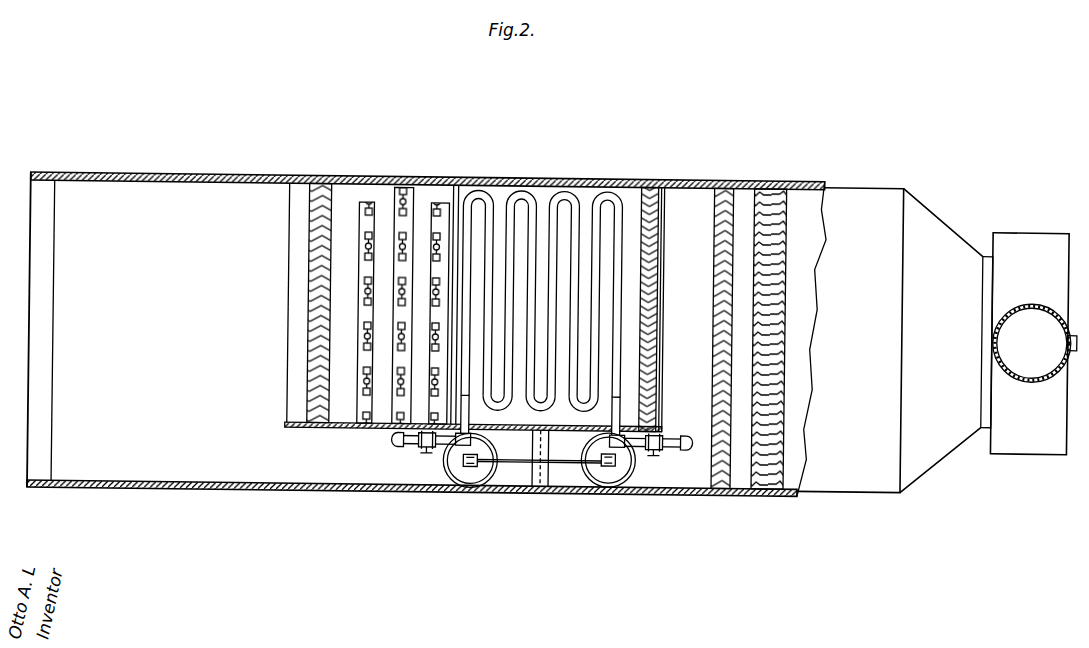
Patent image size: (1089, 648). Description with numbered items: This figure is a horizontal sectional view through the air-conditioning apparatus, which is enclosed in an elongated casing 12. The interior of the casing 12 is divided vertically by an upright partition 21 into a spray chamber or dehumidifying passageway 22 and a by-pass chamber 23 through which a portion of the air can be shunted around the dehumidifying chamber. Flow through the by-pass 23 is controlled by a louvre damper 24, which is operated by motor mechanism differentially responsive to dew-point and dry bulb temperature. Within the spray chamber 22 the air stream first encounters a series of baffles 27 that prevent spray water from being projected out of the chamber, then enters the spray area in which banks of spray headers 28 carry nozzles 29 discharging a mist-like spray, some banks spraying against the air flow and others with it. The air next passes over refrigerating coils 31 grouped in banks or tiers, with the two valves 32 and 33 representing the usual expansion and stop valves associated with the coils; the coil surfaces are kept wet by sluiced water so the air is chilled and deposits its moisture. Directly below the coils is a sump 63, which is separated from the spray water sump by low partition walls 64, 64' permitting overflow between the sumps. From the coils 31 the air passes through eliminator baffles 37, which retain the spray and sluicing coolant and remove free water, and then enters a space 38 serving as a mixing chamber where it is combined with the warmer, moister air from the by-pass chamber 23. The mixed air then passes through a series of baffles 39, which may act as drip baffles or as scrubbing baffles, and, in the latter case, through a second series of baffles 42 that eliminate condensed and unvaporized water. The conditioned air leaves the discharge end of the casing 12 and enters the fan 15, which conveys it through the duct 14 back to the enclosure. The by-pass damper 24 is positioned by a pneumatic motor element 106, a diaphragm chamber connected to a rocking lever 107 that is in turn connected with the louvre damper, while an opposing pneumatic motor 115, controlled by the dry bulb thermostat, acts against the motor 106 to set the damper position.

The casing 12 is at (212, 170).
The duct 14 is at (1035, 366).
The fan 15 is at (1030, 236).
The upright partition 21 is at (283, 420).
The spray chamber 22 is at (270, 336).
The by-pass chamber 23 is at (292, 452).
The louvre damper 24 is at (541, 484).
The baffles 27 is at (312, 255).
The spray headers 28 is at (391, 182).
The nozzles 29 is at (397, 241).
The refrigerating coils 31 is at (508, 192).
The valve 32 is at (660, 449).
The valve 33 is at (425, 447).
The eliminator baffles 37 is at (654, 278).
The mixing chamber 38 is at (689, 217).
The baffles 39 is at (725, 196).
The second series of baffles 42 is at (775, 186).
The sump 63 is at (462, 185).
The partition wall 64 is at (450, 286).
The partition wall 64' is at (683, 310).
The pneumatic motor element 106 is at (610, 469).
The rocking lever 107 is at (520, 454).
The pneumatic motor 115 is at (473, 470).